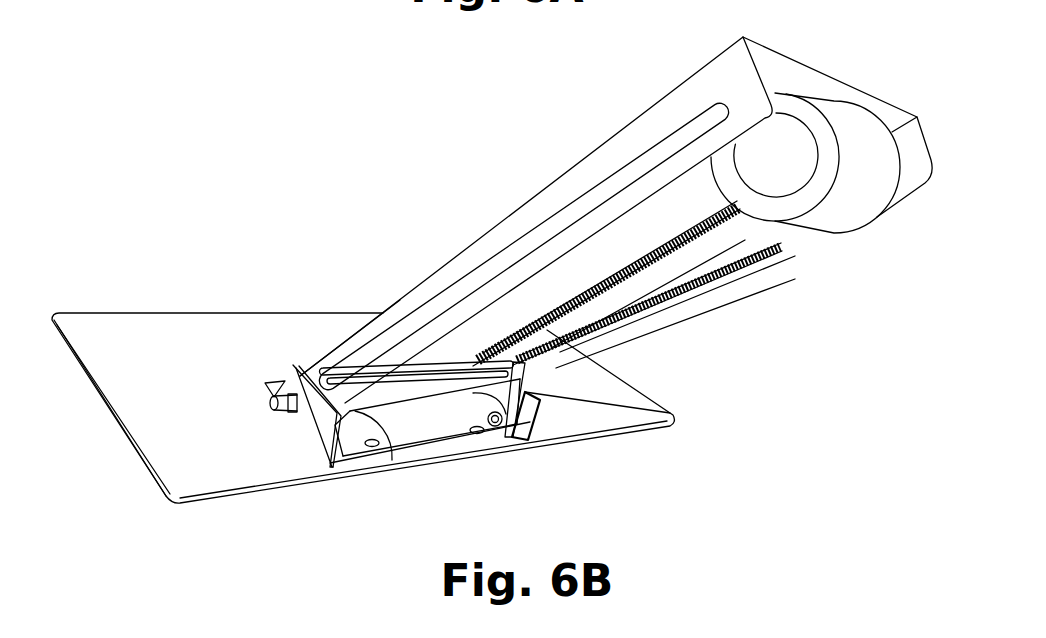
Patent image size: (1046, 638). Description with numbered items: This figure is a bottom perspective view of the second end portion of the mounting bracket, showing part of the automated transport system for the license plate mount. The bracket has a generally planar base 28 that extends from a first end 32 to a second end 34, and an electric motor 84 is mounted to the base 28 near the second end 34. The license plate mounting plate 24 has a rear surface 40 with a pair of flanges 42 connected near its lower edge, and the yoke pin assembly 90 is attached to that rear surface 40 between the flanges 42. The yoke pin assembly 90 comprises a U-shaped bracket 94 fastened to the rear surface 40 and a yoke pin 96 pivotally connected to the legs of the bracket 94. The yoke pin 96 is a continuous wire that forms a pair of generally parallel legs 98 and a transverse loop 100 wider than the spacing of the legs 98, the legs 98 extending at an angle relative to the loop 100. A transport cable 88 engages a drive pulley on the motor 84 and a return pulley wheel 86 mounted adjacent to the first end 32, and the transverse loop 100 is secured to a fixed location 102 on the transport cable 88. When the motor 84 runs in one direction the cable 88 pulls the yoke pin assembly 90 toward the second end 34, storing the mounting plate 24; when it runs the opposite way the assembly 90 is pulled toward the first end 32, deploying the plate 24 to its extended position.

The license plate mounting plate 24 is at (144, 458).
The base 28 is at (795, 60).
The first end 32 is at (312, 360).
The second end 34 is at (853, 89).
The rear surface 40 is at (172, 432).
The flanges 42 is at (309, 432).
The motor 84 is at (842, 207).
The return pulley wheel 86 is at (468, 388).
The transport cable 88 is at (693, 283).
The yoke pin assembly 90 is at (531, 416).
The U-shaped bracket 94 is at (513, 440).
The yoke pin 96 is at (468, 376).
The legs 98 is at (360, 412).
The transverse loop 100 is at (440, 366).
The fixed location 102 is at (556, 363).